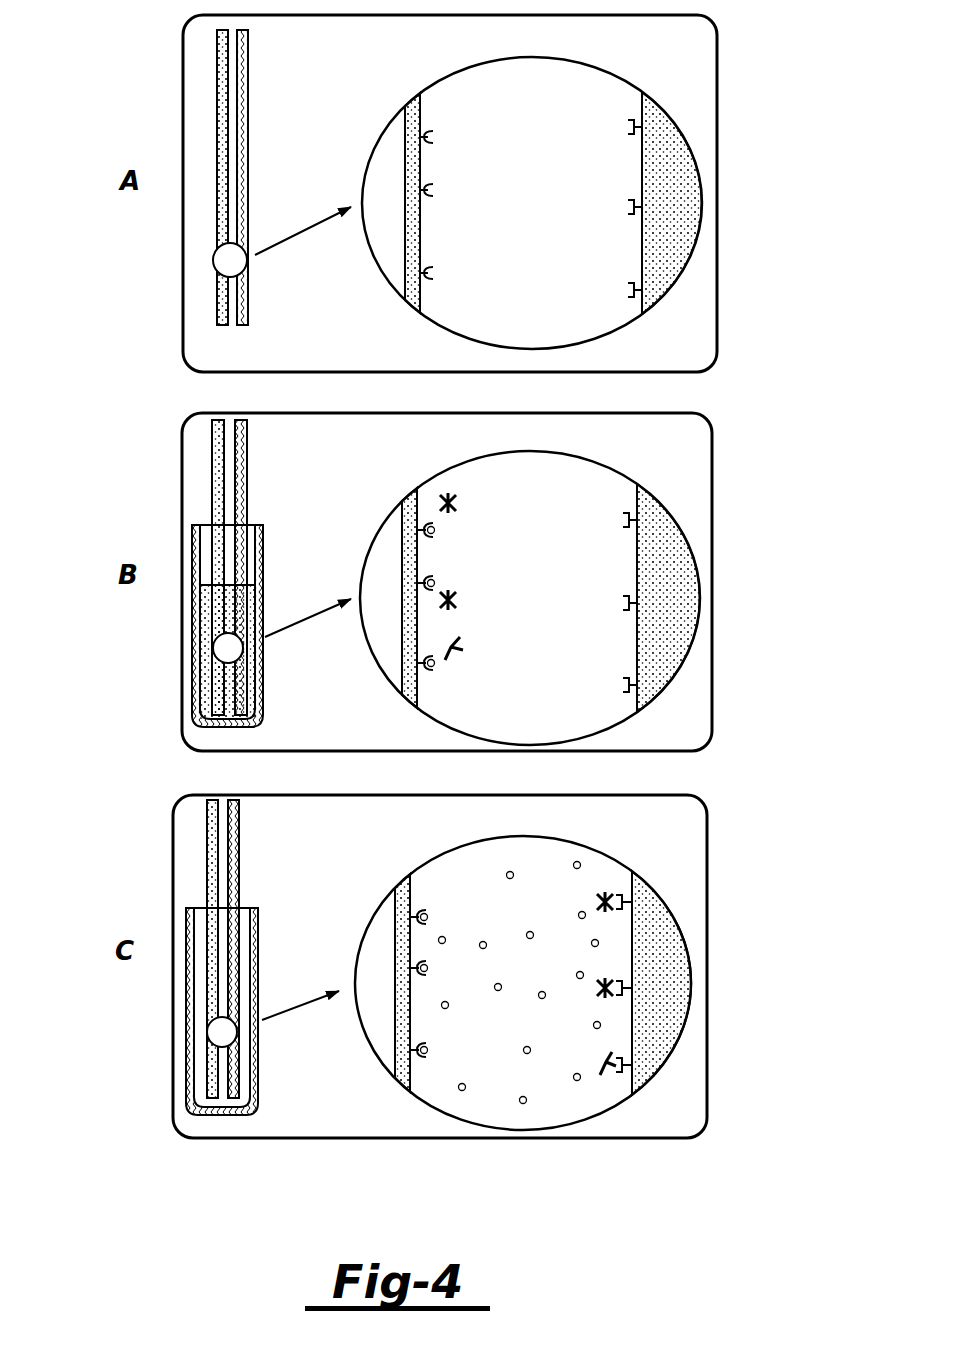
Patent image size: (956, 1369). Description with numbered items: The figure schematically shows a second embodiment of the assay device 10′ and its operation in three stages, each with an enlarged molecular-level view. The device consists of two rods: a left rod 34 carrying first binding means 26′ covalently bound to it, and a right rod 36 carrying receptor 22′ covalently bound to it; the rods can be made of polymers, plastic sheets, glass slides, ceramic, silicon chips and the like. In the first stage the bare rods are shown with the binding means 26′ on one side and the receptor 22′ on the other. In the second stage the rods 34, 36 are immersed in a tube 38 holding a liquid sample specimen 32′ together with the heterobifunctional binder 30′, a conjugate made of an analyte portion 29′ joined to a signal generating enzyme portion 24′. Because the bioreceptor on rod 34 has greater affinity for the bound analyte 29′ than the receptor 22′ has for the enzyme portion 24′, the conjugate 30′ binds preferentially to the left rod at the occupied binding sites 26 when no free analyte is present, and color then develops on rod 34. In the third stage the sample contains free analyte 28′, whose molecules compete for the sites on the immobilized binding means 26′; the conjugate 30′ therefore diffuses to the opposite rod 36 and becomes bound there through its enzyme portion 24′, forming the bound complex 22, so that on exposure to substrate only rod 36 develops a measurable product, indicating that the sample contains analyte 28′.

The test device 10′ is at (258, 93).
The rod 34 is at (215, 127).
The rod 36 is at (250, 143).
The binding means 26′ is at (440, 136).
The capture binding sites with bound analyte 26 is at (420, 540).
The receptor 22′ is at (617, 198).
The bound complex on second strip 22 is at (617, 900).
The liquid sample specimen 32′ is at (198, 565).
The tube 38 is at (197, 690).
The heterobifunctional binder 30′ is at (459, 588).
The enzyme portion 24′ is at (458, 648).
The bound analyte 29′ is at (437, 672).
The free analyte 28′ is at (483, 940).